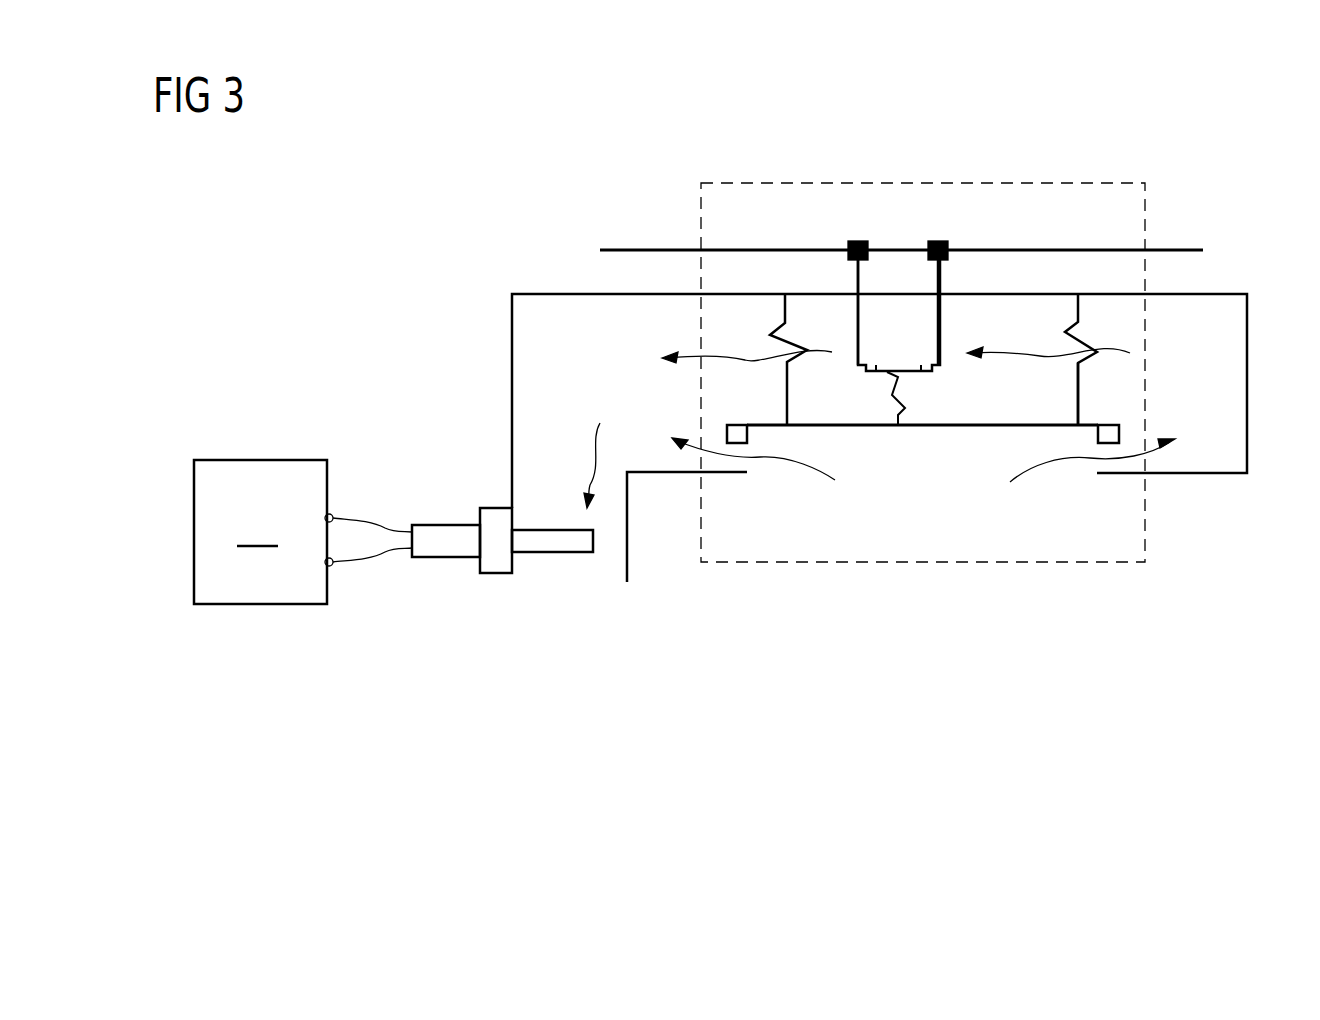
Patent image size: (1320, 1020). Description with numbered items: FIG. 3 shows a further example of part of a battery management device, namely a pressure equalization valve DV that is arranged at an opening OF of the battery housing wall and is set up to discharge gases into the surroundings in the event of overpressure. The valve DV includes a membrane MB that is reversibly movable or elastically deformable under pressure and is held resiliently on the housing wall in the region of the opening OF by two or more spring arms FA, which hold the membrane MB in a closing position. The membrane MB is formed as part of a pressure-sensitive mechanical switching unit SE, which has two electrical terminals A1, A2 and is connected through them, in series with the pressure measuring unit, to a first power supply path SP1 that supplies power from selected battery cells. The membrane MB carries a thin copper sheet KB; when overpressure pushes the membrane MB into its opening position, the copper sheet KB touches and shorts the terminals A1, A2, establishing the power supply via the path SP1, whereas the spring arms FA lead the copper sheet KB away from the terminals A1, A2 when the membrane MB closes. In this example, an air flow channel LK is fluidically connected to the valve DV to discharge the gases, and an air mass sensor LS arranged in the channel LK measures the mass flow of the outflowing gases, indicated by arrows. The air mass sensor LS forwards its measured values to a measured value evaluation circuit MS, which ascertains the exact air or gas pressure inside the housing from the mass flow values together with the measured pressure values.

The pressure equalization valve DV is at (550, 233).
The first power supply path SP1 is at (641, 249).
The first electrical terminal A1 is at (860, 284).
The second electrical terminal A2 is at (939, 284).
The air flow channel LK is at (550, 377).
The air mass sensor LS is at (492, 508).
The measured value evaluation circuit MS is at (303, 532).
The opening OF is at (568, 572).
The pressure-sensitive mechanical switching unit SE is at (1144, 525).
The thin copper sheet KB is at (885, 373).
The spring arms FA is at (1070, 358).
The membrane MB is at (948, 428).